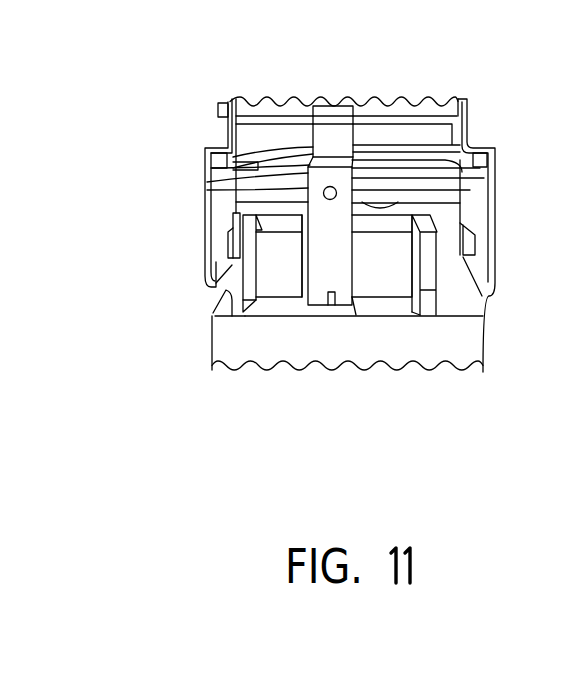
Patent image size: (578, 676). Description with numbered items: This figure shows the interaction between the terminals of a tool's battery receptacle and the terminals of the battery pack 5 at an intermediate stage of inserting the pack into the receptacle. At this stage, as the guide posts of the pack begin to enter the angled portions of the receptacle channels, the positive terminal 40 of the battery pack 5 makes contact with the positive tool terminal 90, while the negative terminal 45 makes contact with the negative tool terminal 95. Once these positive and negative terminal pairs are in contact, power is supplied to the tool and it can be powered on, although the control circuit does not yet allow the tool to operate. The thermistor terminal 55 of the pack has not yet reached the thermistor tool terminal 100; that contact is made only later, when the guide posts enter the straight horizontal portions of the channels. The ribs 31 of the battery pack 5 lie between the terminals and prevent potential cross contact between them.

The battery pack 5 is at (405, 342).
The ribs 31 is at (230, 243).
The positive terminal 40 is at (452, 282).
The negative terminal 45 is at (213, 312).
The thermistor terminal 55 is at (284, 282).
The positive tool terminal 90 is at (497, 245).
The negative tool terminal 95 is at (205, 258).
The thermistor tool terminal 100 is at (322, 282).